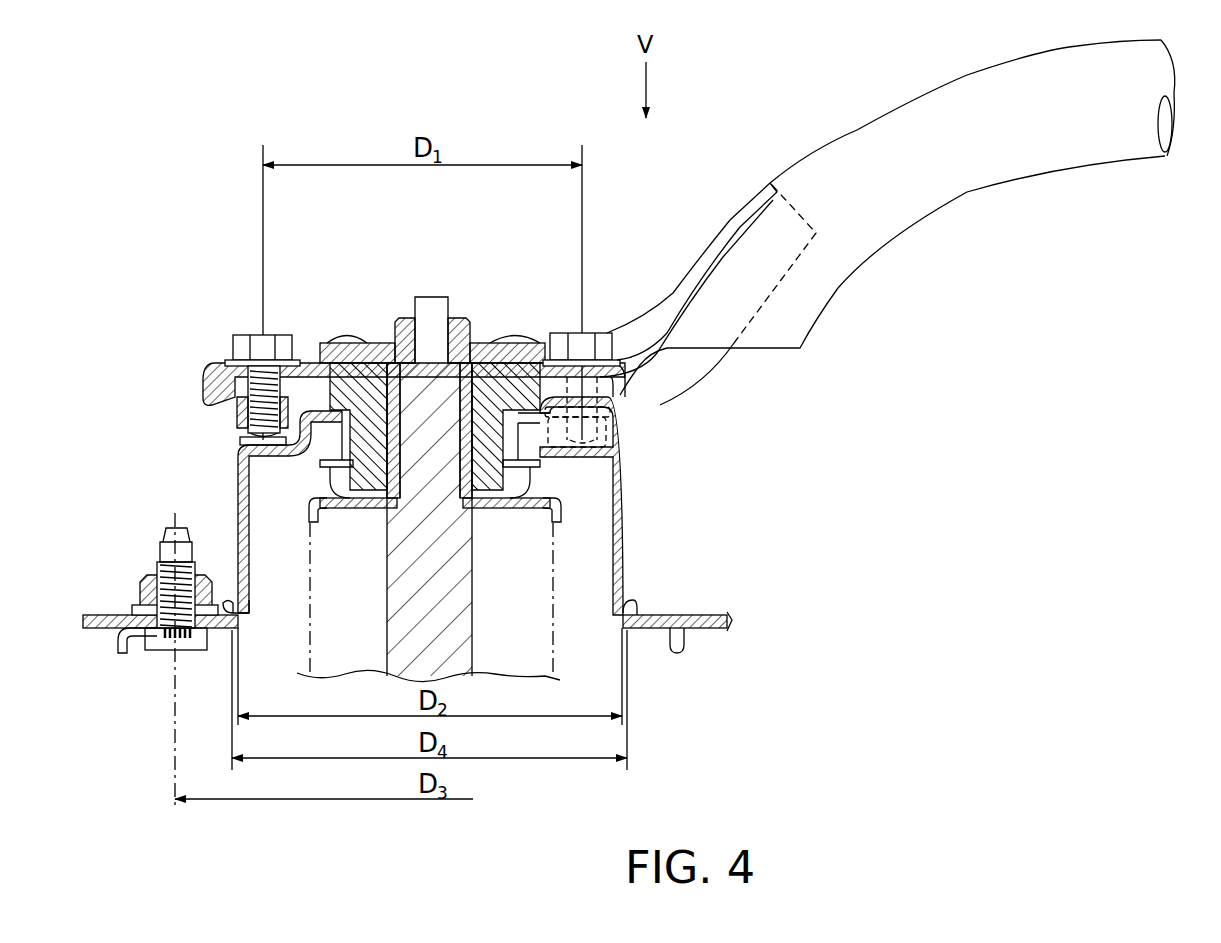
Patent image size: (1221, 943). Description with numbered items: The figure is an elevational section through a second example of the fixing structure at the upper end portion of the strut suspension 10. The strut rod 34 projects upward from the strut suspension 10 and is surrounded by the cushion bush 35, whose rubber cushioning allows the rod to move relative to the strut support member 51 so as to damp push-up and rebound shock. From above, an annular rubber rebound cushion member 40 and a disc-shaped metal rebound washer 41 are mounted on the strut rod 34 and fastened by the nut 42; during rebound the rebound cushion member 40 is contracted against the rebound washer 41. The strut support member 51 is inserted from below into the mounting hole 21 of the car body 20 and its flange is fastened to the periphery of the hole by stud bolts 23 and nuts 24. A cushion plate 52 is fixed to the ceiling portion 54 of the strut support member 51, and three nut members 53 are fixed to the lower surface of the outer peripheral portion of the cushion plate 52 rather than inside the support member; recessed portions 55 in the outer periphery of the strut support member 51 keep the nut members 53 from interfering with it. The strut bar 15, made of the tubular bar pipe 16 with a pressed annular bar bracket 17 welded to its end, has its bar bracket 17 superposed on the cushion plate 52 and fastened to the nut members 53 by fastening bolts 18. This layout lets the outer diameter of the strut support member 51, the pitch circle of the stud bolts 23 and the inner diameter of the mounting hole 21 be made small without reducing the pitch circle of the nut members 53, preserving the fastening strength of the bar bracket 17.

The strut suspension 10 is at (308, 578).
The strut bar 15 is at (887, 222).
The bar pipe 16 is at (846, 139).
The bar bracket 17 is at (739, 203).
The fastening bolt 18 is at (252, 312).
The car body 20 is at (105, 612).
The mounting hole 21 is at (245, 615).
The stud bolt 23 is at (162, 652).
The nut 24 is at (143, 577).
The strut rod 34 is at (432, 297).
The cushion bush 35 is at (505, 510).
The rebound cushion member 40 is at (488, 312).
The rebound washer 41 is at (530, 312).
The nut 42 is at (397, 312).
The strut support member 51 is at (237, 507).
The cushion plate 52 is at (225, 385).
The nut member 53 is at (237, 415).
The ceiling portion 54 is at (323, 312).
The recessed portion 55 is at (257, 443).